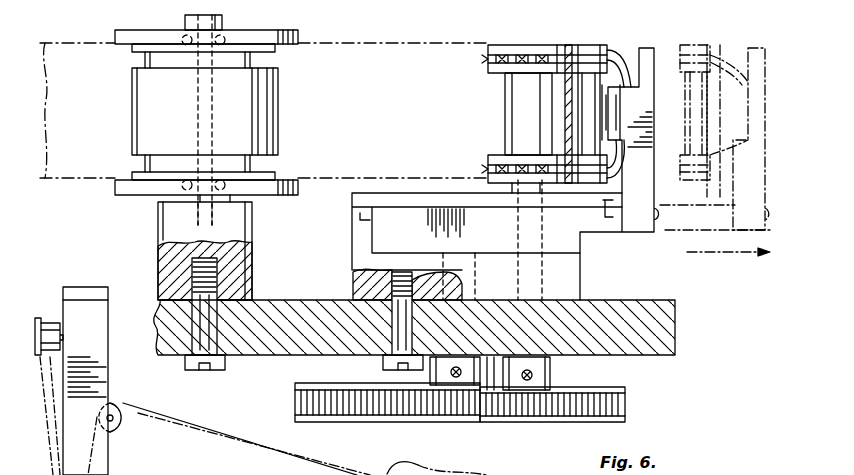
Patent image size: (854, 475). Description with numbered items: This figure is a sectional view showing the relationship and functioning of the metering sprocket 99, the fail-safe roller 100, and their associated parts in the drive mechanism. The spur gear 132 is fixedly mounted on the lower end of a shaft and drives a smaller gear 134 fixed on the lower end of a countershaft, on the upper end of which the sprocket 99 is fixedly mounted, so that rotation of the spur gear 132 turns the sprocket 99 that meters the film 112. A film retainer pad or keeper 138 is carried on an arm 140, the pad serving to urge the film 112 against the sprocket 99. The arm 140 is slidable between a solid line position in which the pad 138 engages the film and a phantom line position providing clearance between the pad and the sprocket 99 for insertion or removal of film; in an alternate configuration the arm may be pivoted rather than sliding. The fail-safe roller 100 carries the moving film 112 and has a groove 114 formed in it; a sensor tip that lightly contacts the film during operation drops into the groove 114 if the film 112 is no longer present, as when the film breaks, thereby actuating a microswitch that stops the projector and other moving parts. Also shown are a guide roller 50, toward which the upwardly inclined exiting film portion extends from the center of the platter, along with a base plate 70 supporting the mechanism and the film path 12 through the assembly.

The sheet material web path 12 is at (447, 468).
The guide roller 50 is at (118, 428).
The base plate 70 is at (678, 332).
The sprocket 99 is at (518, 140).
The fail-safe roller 100 is at (240, 104).
The film 112 is at (567, 105).
The groove 114 is at (146, 162).
The spur gear 132 is at (322, 395).
The smaller gear 134 is at (560, 400).
The film retainer pad 138 is at (598, 45).
The arm 140 is at (637, 232).